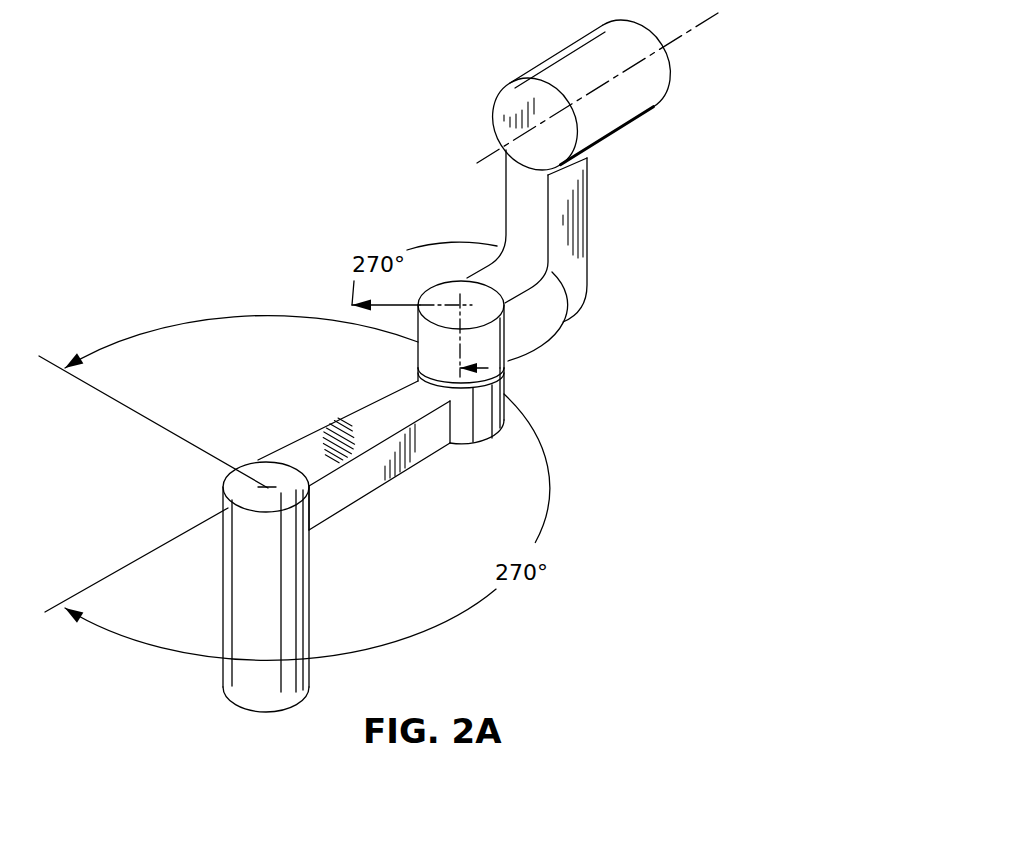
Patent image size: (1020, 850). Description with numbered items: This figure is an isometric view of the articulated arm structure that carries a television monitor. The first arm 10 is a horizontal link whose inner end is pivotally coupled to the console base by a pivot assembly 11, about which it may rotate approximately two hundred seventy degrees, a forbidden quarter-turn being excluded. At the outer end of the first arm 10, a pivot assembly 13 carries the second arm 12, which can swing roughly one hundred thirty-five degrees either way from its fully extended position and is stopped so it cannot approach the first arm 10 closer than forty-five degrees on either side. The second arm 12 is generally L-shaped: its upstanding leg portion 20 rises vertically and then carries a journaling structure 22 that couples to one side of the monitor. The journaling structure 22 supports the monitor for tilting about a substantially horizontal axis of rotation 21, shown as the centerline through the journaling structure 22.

The first arm 10 is at (382, 476).
The pivot assembly 11 is at (270, 484).
The second arm 12 is at (490, 281).
The pivot assembly 13 is at (460, 302).
The upstanding leg portion 20 is at (587, 233).
The horizontal axis of rotation 21 is at (670, 45).
The journaling structure 22 is at (538, 57).